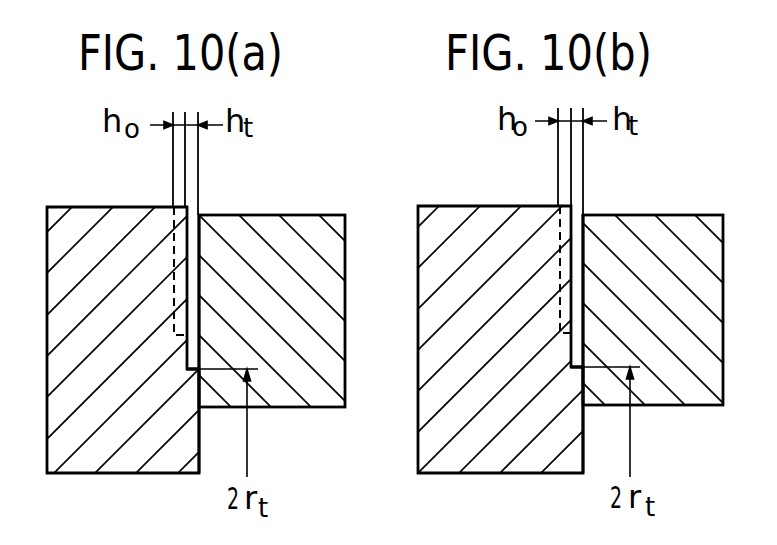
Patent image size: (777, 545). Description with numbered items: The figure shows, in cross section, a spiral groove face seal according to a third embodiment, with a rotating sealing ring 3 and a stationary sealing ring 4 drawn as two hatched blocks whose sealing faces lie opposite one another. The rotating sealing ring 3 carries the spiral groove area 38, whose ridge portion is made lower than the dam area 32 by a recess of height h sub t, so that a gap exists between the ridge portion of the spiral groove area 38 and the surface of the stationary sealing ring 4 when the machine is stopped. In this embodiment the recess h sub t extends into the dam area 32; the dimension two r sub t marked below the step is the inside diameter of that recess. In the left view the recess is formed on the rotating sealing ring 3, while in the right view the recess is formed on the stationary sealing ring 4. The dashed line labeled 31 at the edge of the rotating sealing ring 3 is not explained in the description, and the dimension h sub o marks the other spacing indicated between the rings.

In FIG. 10A, the rotating sealing ring 3 is at (93, 218).
In FIG. 10B, the rotating sealing ring 3 is at (462, 218).
In FIG. 10A, the stationary sealing ring 4 is at (318, 233).
In FIG. 10B, the stationary sealing ring 4 is at (688, 228).
In FIG. 10A, the groove wall (dashed original position) 31 is at (175, 247).
In FIG. 10B, the groove wall (dashed original position) 31 is at (562, 248).
In FIG. 10A, the spiral groove area 38 is at (198, 252).
In FIG. 10B, the spiral groove area 38 is at (583, 258).
In FIG. 10A, the dam area 32 is at (199, 380).
In FIG. 10B, the dam area 32 is at (581, 381).